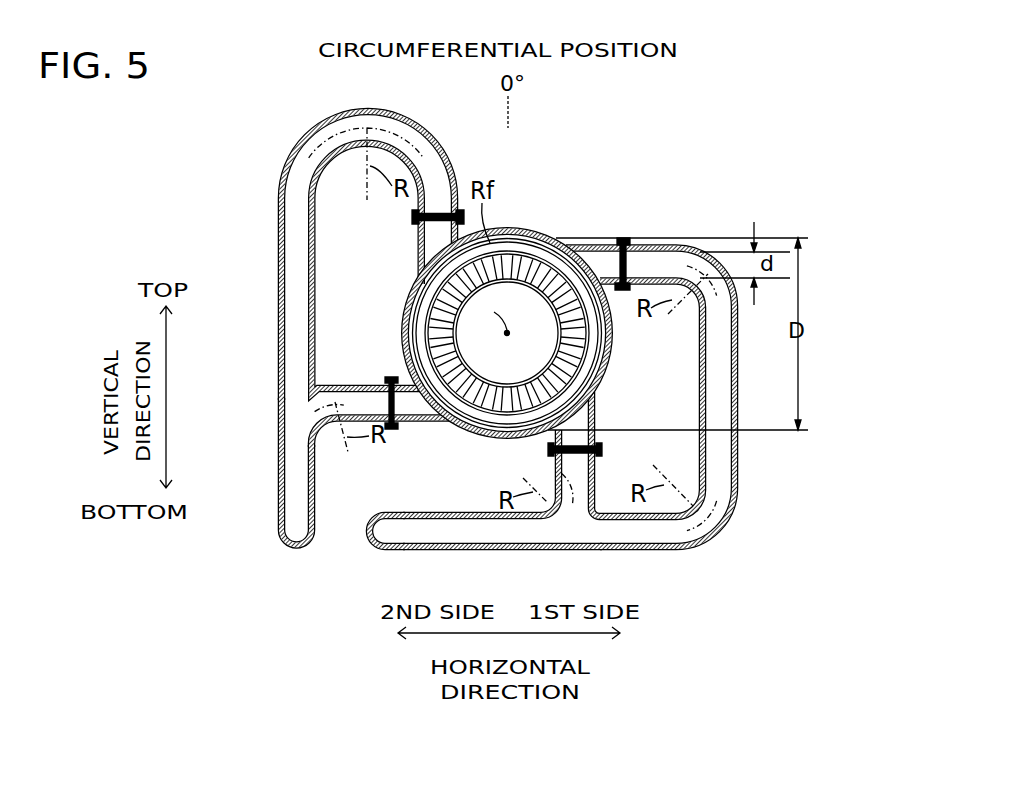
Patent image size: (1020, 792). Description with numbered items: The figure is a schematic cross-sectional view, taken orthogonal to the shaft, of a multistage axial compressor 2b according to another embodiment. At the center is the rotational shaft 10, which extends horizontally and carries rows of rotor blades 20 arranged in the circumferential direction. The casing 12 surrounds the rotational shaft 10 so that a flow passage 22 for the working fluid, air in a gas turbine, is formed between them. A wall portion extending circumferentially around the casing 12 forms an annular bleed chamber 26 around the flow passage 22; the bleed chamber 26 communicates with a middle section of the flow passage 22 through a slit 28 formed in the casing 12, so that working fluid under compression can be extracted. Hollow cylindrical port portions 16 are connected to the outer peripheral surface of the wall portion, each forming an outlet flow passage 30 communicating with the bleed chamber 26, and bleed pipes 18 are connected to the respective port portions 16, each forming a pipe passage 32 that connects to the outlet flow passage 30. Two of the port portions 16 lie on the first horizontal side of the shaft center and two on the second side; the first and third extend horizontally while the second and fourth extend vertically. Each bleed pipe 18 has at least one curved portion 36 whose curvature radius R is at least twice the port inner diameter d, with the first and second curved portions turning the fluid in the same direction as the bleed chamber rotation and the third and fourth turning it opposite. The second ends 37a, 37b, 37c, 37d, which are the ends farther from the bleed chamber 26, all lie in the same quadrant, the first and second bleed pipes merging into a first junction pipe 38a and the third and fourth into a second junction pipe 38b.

The multistage axial compressor 2b is at (748, 152).
The rotational shaft 10 is at (465, 363).
The casing 12 is at (506, 228).
The port portion 16 is at (592, 245).
The bleed pipe 18 is at (282, 240).
The rotor blade 20 is at (488, 425).
The flow passage 22 is at (498, 432).
The bleed chamber 26 is at (522, 238).
The slit 28 is at (522, 434).
The outlet flow passage 30 is at (433, 232).
The pipe passage 32 is at (432, 161).
The curved portion 36 is at (320, 127).
The second end of first bleed pipe 37a is at (313, 653).
The second end of second bleed pipe 37b is at (368, 528).
The second end of third bleed pipe 37c is at (219, 613).
The second end of fourth bleed pipe 37d is at (294, 560).
The first junction pipe 38a is at (462, 550).
The second junction pipe 38b is at (292, 549).